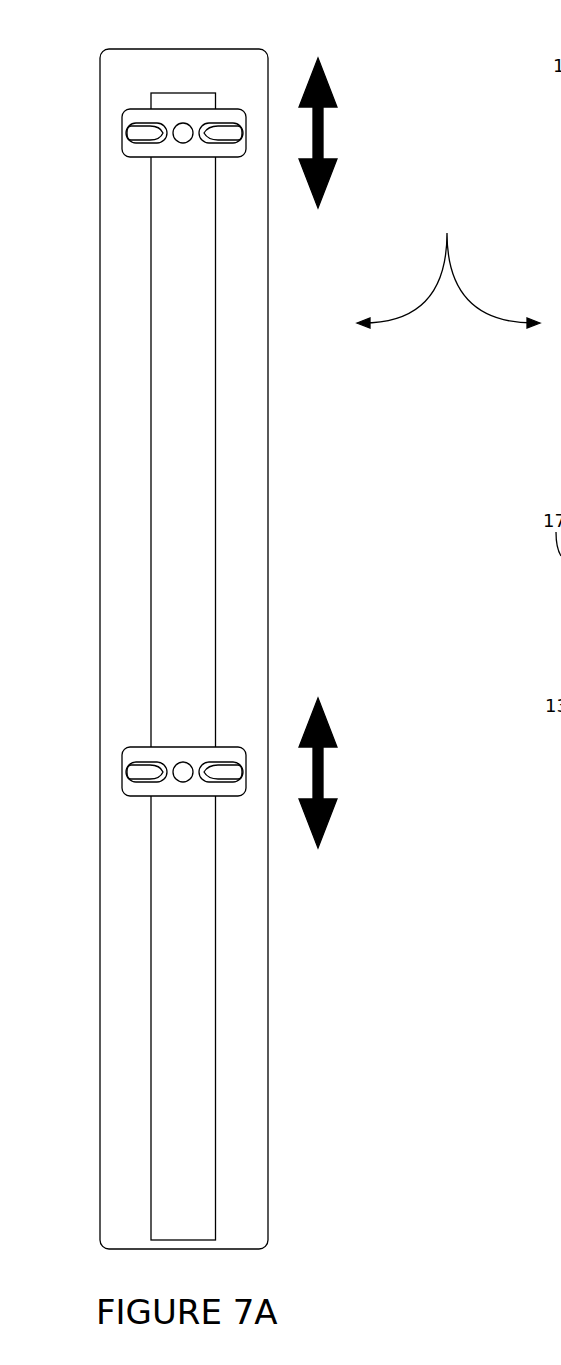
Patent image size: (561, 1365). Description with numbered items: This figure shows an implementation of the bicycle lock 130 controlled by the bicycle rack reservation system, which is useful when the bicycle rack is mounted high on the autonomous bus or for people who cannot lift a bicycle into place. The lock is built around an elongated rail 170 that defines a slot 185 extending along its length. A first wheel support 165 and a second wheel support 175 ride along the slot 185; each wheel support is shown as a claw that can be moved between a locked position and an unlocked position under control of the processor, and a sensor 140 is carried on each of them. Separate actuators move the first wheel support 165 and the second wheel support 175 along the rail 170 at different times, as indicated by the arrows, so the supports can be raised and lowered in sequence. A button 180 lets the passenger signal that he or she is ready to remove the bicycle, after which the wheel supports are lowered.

The bicycle lock 130 is at (448, 268).
The sensor 140 is at (183, 123).
The first wheel support 165 is at (143, 160).
The rail 170 is at (268, 1017).
The second wheel support 175 is at (143, 800).
The button 180 is at (560, 1030).
The slot 185 is at (168, 1102).